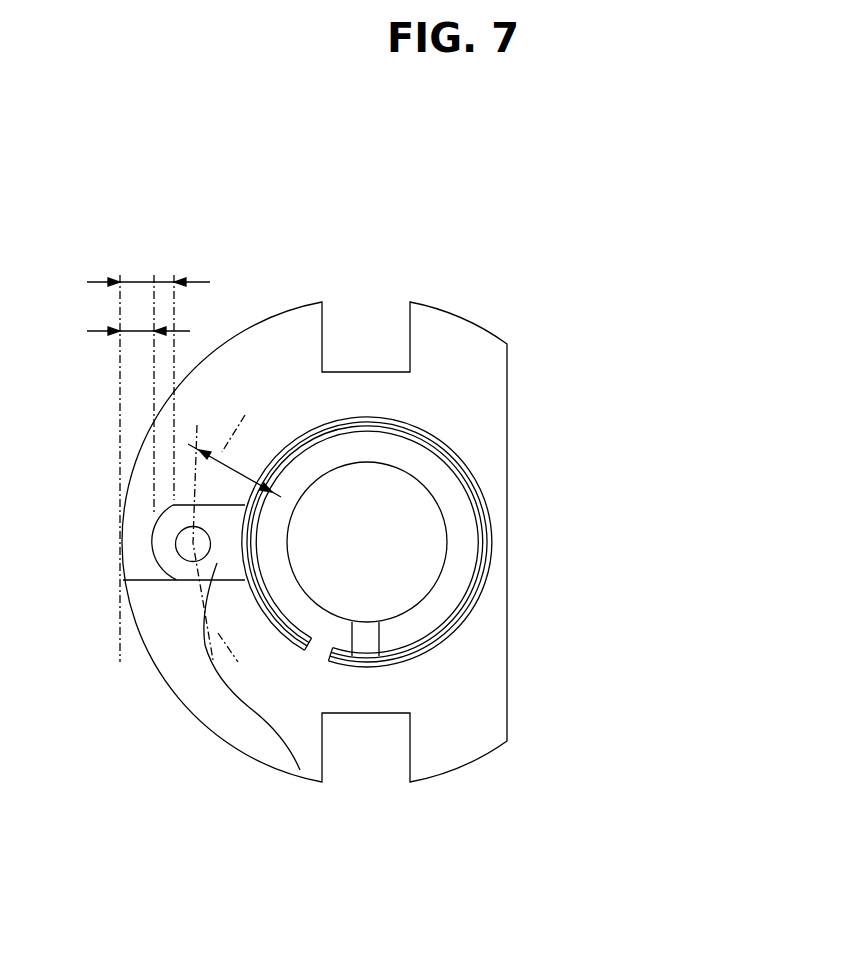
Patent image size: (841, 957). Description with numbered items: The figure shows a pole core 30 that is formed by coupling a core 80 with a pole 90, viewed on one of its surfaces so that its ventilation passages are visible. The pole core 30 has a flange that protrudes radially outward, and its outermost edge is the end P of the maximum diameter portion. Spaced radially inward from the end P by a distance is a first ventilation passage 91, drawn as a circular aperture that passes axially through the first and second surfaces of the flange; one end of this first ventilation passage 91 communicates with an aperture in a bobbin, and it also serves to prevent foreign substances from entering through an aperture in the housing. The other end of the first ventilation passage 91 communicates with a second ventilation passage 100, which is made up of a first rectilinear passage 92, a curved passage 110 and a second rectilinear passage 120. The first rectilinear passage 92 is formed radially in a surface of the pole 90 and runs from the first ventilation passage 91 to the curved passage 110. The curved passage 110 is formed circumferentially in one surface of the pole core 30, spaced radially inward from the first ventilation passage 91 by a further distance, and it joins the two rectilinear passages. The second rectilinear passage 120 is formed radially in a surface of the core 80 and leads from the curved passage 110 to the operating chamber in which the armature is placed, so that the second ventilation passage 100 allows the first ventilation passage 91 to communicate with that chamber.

The pole core 30 is at (262, 248).
The pole 90 is at (450, 370).
The core 80 is at (463, 528).
The first ventilation passage 91 is at (125, 582).
The end of the maximum diameter portion P is at (120, 543).
The first rectilinear passage 92 is at (293, 767).
The second ventilation passage 100 is at (367, 654).
The curved passage 110 is at (438, 648).
The second rectilinear passage 120 is at (365, 643).